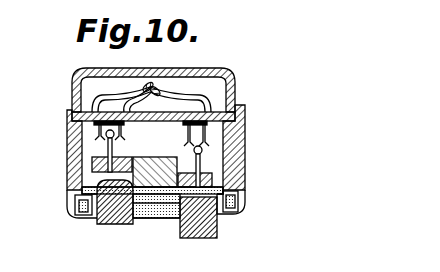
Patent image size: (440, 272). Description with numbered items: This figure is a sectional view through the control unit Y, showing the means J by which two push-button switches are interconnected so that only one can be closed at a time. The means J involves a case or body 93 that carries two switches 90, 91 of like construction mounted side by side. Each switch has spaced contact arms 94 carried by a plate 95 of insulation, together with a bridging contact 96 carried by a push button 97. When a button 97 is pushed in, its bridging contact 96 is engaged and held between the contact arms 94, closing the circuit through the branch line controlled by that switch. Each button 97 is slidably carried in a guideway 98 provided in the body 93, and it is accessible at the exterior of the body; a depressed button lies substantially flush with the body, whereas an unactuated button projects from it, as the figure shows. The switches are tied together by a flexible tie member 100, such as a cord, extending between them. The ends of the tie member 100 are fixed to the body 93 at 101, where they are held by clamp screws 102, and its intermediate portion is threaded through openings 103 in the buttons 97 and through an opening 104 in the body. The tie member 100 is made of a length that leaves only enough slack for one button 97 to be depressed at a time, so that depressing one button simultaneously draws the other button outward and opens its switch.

The control unit Y is at (206, 63).
The switch interconnecting means J is at (259, 121).
The switch 90 is at (94, 135).
The switch 91 is at (243, 125).
The case 93 is at (234, 161).
The contact arms 94 is at (210, 129).
The plate of insulation 95 is at (72, 117).
The bridging contact 96 is at (108, 150).
The push button 97 is at (107, 223).
The guideway 98 is at (92, 187).
The flexible tie member 100 is at (162, 194).
The fixed ends of tie member 101 is at (234, 182).
The clamp screws 102 is at (243, 205).
The openings in buttons 103 is at (218, 218).
The opening in body 104 is at (148, 194).